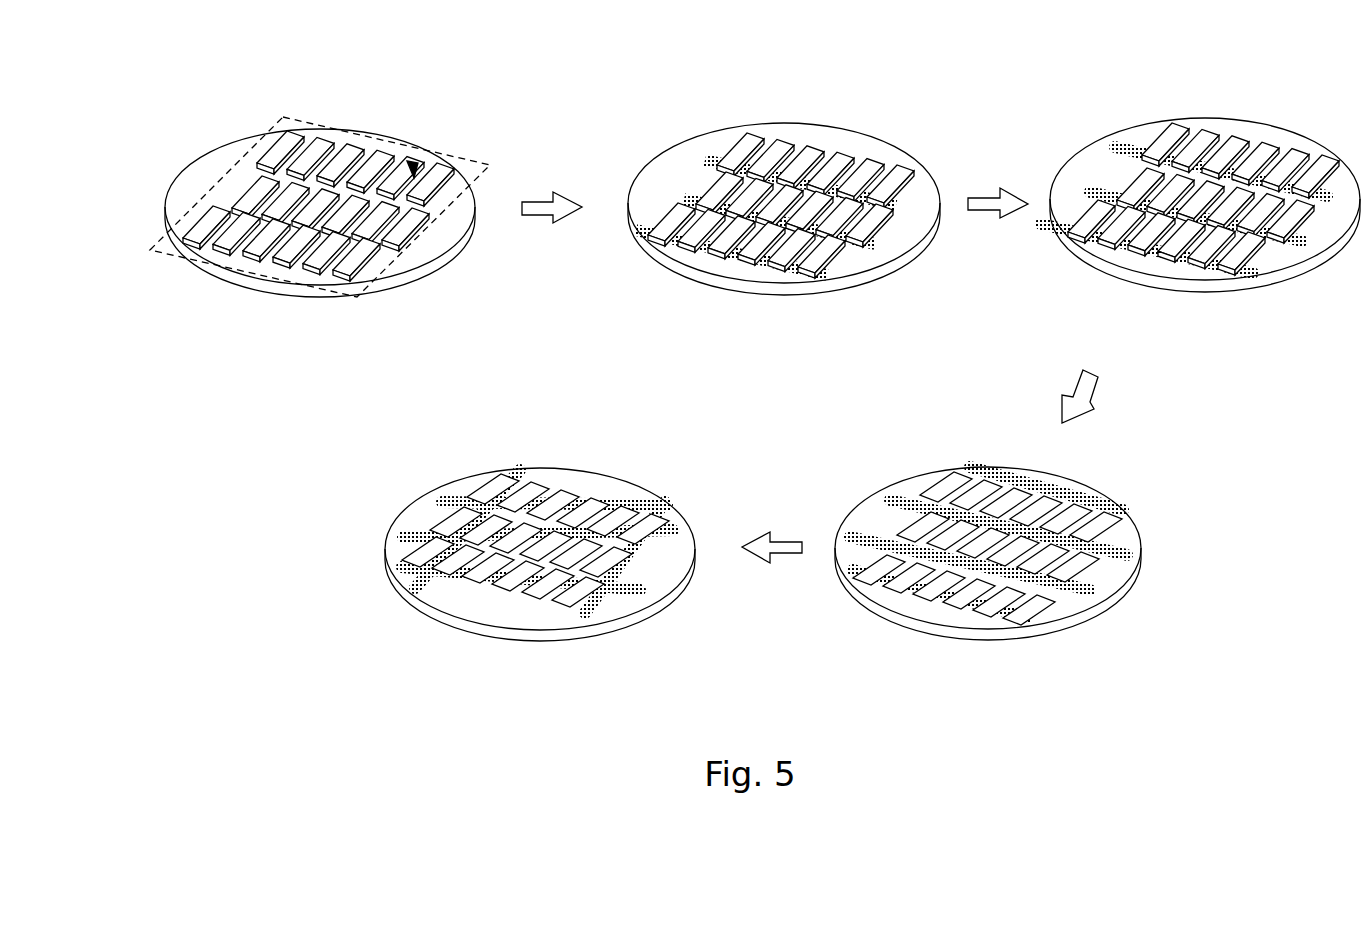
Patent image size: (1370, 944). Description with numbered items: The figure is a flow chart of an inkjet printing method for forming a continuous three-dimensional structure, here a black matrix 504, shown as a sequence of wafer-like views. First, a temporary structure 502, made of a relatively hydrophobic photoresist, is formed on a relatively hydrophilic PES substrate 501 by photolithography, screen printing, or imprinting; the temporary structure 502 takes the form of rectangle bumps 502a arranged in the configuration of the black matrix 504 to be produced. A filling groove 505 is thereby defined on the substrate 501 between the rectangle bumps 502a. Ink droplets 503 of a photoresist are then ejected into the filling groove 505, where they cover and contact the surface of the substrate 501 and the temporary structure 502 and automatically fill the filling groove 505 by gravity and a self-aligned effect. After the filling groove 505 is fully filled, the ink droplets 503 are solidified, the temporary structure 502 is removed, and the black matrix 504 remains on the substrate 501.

The substrate 501 is at (210, 155).
The temporary structure 502 is at (462, 150).
The rectangle bumps 502a is at (322, 140).
The ink droplets 503 is at (713, 162).
The black matrix 504 is at (453, 497).
The filling groove 505 is at (410, 160).